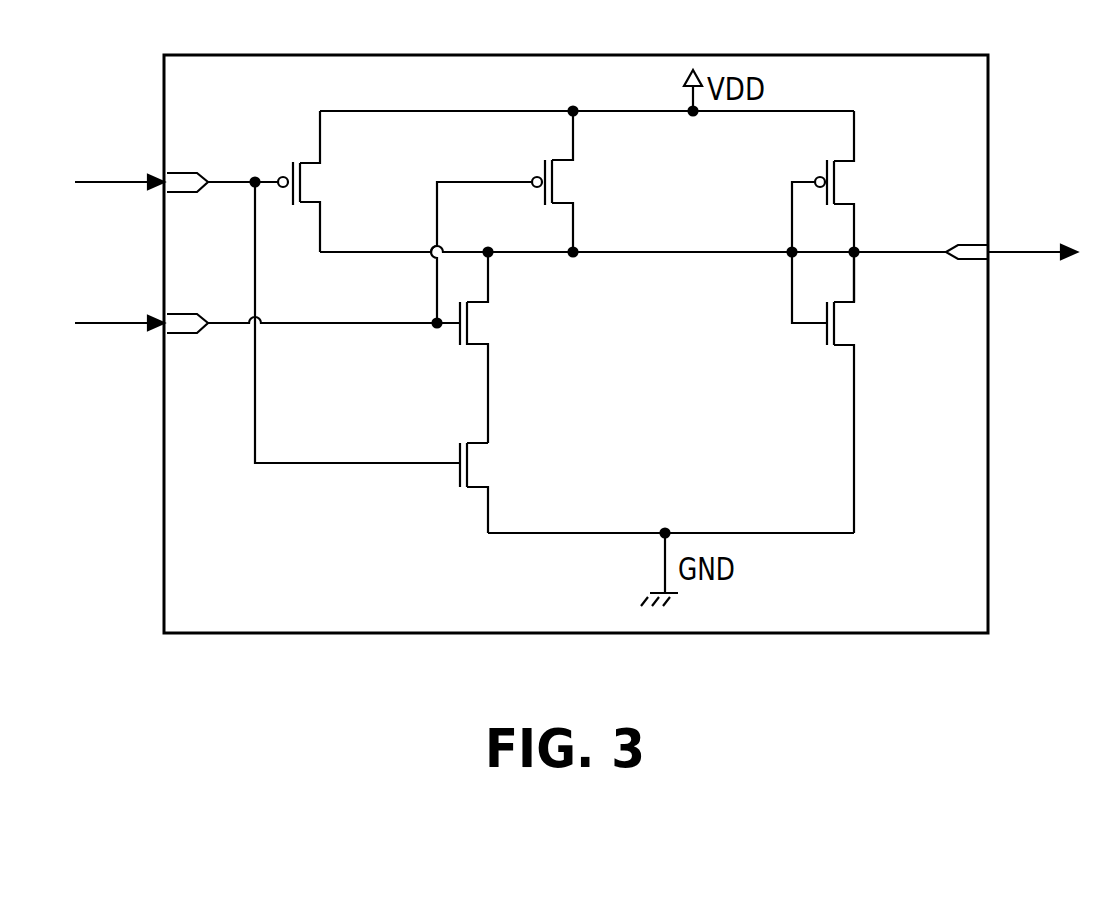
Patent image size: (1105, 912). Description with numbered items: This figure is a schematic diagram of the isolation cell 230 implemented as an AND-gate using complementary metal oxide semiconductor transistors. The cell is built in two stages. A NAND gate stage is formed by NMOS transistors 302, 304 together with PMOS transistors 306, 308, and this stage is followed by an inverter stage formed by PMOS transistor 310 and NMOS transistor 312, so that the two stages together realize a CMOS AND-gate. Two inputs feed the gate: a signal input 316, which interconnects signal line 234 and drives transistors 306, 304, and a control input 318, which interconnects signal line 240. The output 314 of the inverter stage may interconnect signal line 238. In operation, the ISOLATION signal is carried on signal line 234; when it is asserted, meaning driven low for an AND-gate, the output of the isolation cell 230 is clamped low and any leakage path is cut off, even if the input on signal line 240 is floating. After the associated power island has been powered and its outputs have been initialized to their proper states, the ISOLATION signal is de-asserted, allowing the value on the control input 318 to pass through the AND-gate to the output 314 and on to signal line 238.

The isolation cell 230 is at (578, 54).
The signal line 240 is at (128, 179).
The signal line 234 is at (128, 320).
The signal input 316 is at (178, 173).
The control input 318 is at (178, 313).
The PMOS transistor 306 is at (315, 165).
The PMOS transistor 308 is at (568, 163).
The NMOS transistor 302 is at (484, 304).
The NMOS transistor 304 is at (484, 445).
The PMOS transistor 310 is at (848, 163).
The NMOS transistor 312 is at (848, 305).
The output 314 is at (970, 244).
The signal line 238 is at (1018, 250).